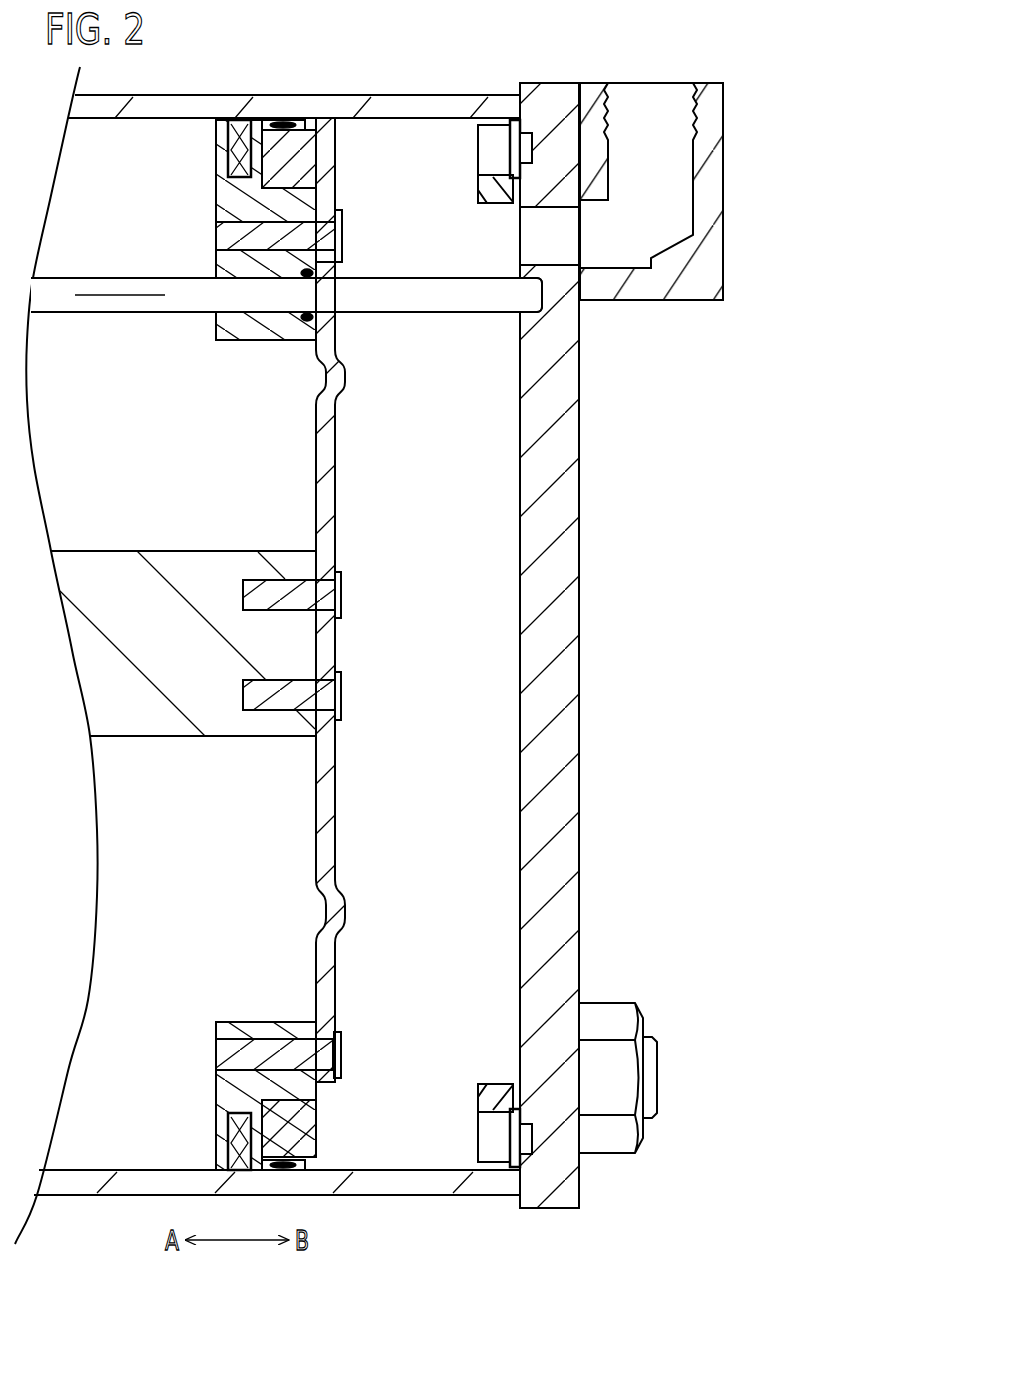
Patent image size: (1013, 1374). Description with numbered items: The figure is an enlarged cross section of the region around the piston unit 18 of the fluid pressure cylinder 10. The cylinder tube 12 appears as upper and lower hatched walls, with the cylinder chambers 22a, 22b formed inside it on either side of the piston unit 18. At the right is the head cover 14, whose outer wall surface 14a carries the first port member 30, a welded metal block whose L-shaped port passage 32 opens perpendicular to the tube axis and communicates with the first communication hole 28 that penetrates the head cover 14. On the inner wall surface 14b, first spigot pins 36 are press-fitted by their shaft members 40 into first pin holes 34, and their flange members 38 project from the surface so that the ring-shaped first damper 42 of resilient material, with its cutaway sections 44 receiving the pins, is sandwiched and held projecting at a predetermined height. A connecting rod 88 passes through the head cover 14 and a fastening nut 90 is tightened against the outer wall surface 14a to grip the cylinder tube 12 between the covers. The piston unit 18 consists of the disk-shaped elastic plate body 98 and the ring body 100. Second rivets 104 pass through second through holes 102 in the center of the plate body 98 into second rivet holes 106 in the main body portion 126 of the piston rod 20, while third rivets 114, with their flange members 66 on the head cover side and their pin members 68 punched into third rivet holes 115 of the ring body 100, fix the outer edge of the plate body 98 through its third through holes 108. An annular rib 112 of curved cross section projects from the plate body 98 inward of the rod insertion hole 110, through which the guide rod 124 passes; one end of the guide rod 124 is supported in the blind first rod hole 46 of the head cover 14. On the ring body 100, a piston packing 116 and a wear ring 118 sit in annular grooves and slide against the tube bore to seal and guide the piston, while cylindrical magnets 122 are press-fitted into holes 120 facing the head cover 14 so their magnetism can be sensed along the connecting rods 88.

The fluid pressure cylinder 10 is at (440, 42).
The cylinder tube 12 is at (425, 105).
The head cover 14 is at (582, 652).
The outer wall surface 14a is at (581, 500).
The inner wall surface 14b is at (520, 453).
The piston unit 18 is at (357, 448).
The piston rod 20 is at (109, 548).
The cylinder chamber 22a is at (492, 792).
The cylinder chamber 22b is at (120, 876).
The first communication hole 28 is at (553, 238).
The first port member 30 is at (728, 80).
The port passage 32 is at (677, 200).
The first pin hole 34 is at (527, 153).
The first spigot pin 36 is at (503, 142).
The flange member 38 is at (496, 180).
The shaft member 40 is at (528, 143).
The first damper 42 is at (475, 1085).
The cutaway section 44 is at (487, 176).
The first rod hole 46 is at (540, 297).
The flange member 66 is at (343, 252).
The pin member 68 is at (248, 240).
The connecting rod 88 is at (650, 1077).
The fastening nut 90 is at (607, 1022).
The plate body 98 is at (300, 862).
The ring body 100 is at (208, 332).
The second through hole 102 is at (340, 590).
The second rivet 104 is at (343, 598).
The second rivet hole 106 is at (284, 578).
The third through hole 108 is at (286, 1058).
The rod insertion hole 110 is at (253, 310).
The rib 112 is at (345, 905).
The third rivet 114 is at (346, 226).
The third rivet hole 115 is at (217, 233).
The piston packing 116 is at (238, 125).
The wear ring 118 is at (280, 123).
The hole 120 is at (318, 147).
The magnet 122 is at (297, 161).
The guide rod 124 is at (423, 293).
The main body portion 126 is at (152, 722).